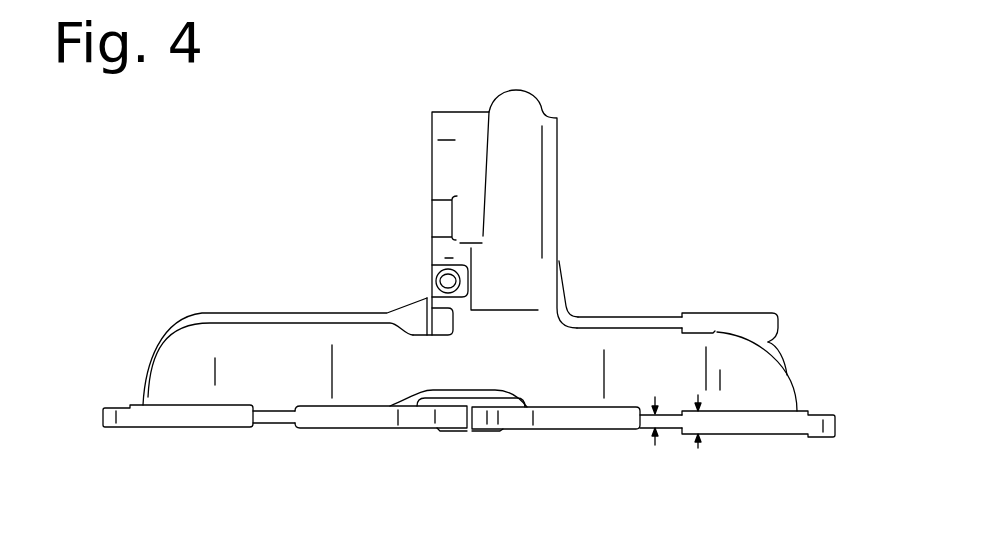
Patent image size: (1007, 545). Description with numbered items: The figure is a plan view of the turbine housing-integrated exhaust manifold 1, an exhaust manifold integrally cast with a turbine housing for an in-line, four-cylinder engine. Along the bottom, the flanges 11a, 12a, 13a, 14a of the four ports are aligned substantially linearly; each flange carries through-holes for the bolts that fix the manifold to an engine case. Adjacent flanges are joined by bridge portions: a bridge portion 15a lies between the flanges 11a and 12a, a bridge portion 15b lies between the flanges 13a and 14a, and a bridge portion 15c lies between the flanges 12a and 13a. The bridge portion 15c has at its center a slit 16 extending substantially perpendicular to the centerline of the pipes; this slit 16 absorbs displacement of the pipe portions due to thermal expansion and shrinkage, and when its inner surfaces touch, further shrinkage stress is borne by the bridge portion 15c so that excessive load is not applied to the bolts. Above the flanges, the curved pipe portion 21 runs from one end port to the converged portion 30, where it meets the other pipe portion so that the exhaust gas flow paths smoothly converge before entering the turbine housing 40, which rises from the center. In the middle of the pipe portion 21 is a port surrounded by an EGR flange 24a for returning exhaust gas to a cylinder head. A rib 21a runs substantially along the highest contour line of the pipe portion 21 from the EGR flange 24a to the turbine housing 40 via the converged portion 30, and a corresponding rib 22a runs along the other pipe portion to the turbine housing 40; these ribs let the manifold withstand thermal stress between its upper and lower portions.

The turbine housing-integrated exhaust manifold 1 is at (712, 165).
The flange 11a is at (758, 427).
The flange 12a is at (592, 420).
The flange 13a is at (350, 415).
The flange 14a is at (173, 415).
The bridge portion 15a is at (660, 428).
The bridge portion 15b is at (277, 417).
The bridge portion 15c is at (485, 418).
The slit 16 is at (470, 425).
The pipe portion 21 is at (712, 398).
The rib 21a is at (655, 317).
The rib 22a is at (297, 313).
The EGR flange 24a is at (752, 325).
The converged portion 30 is at (515, 321).
The turbine housing 40 is at (460, 180).